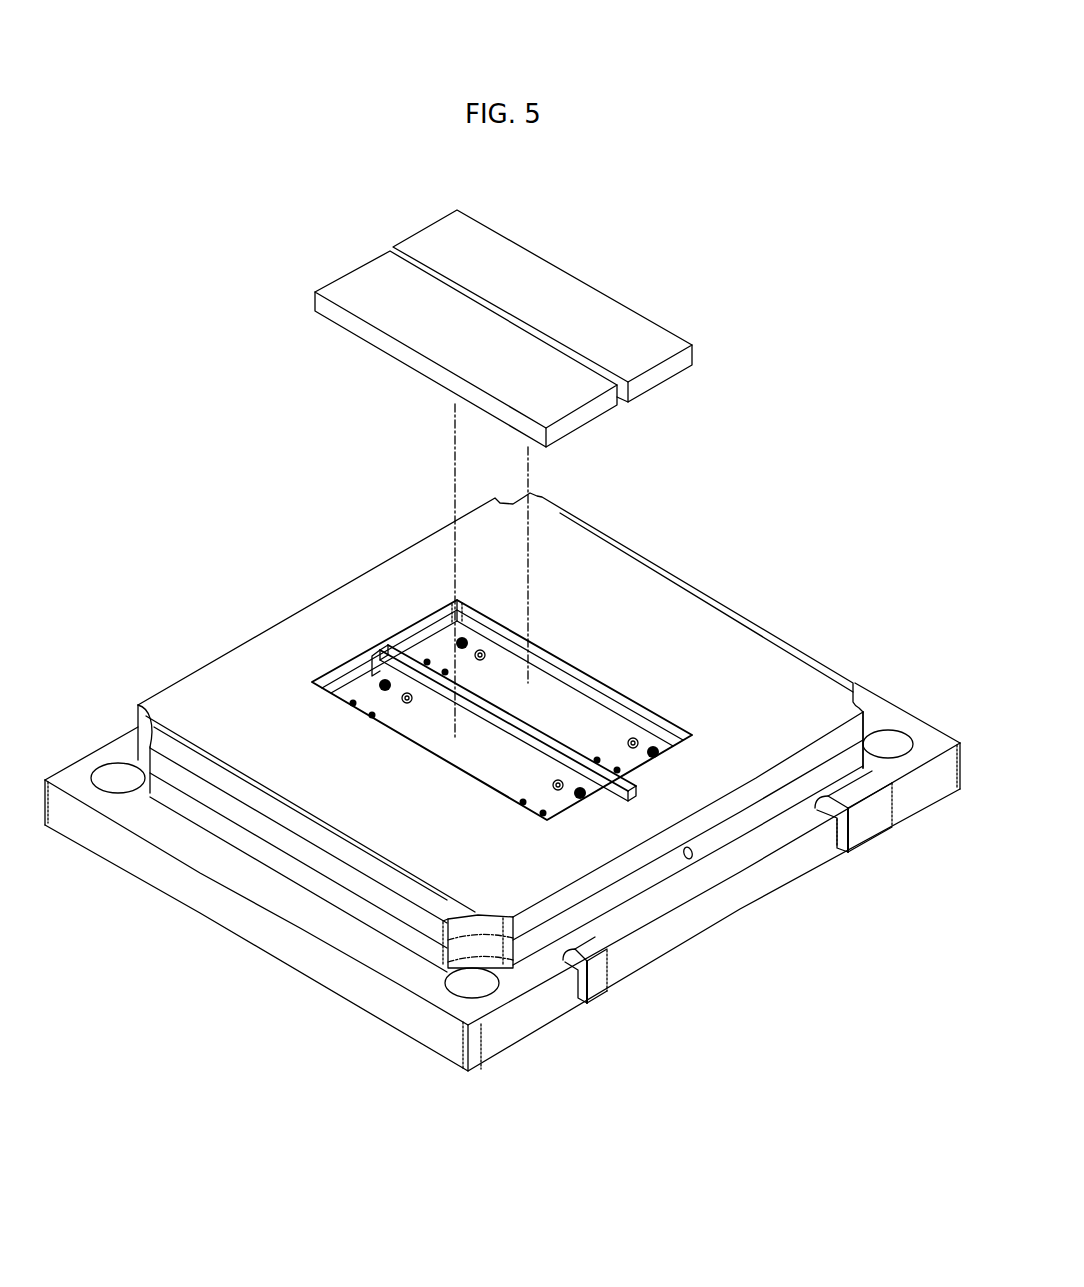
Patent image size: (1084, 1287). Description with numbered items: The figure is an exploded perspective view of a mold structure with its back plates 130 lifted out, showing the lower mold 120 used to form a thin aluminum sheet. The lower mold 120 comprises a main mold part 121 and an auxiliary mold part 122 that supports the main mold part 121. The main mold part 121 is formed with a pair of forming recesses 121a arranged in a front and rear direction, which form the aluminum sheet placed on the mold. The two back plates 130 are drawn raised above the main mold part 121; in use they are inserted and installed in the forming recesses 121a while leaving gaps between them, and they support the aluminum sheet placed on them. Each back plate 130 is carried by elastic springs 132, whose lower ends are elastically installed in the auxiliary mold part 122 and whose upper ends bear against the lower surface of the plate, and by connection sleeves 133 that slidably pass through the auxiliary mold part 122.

The lower mold 120 is at (204, 981).
The main mold part 121 is at (778, 688).
The forming recesses 121a is at (573, 707).
The auxiliary mold part 122 is at (845, 770).
The back plates 130 is at (557, 286).
The elastic springs 132 is at (440, 620).
The connection sleeves 133 is at (632, 737).